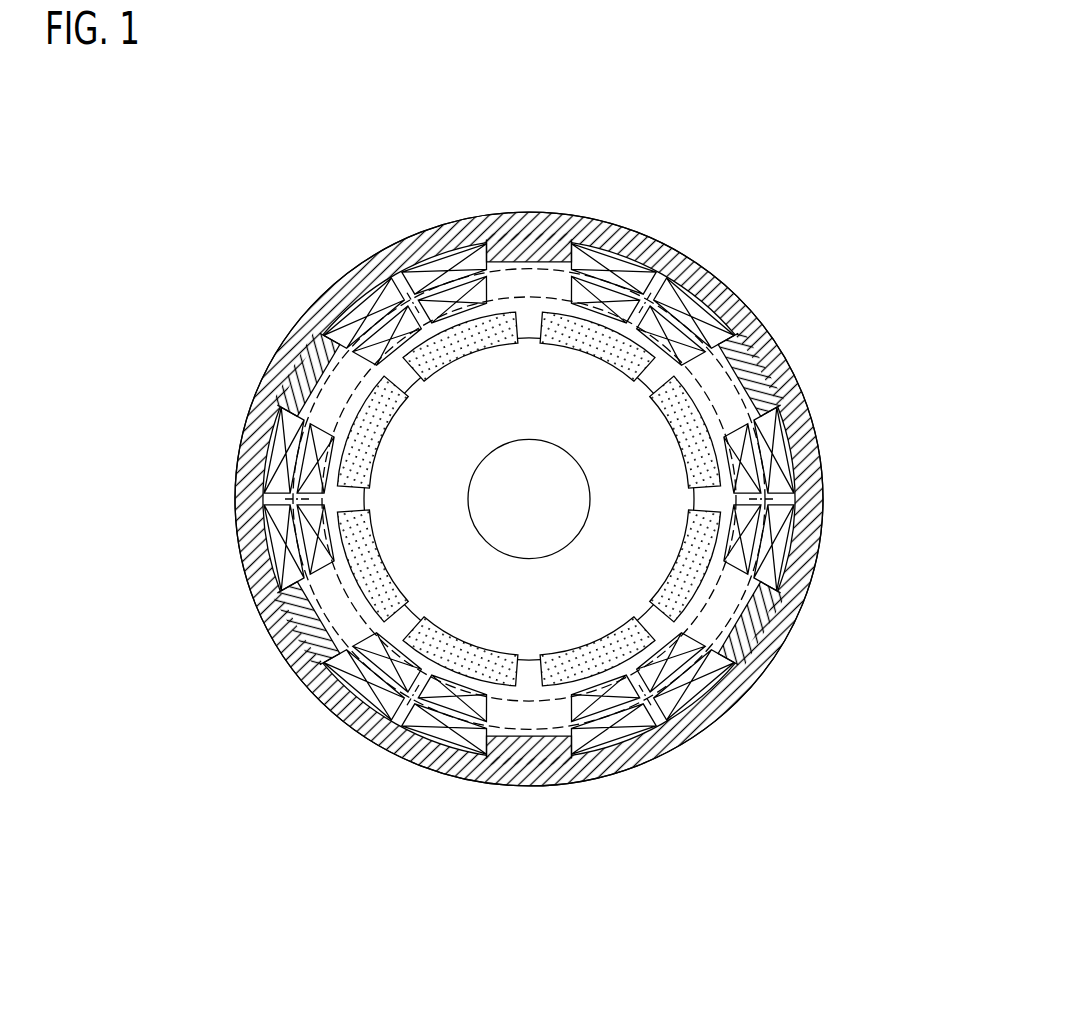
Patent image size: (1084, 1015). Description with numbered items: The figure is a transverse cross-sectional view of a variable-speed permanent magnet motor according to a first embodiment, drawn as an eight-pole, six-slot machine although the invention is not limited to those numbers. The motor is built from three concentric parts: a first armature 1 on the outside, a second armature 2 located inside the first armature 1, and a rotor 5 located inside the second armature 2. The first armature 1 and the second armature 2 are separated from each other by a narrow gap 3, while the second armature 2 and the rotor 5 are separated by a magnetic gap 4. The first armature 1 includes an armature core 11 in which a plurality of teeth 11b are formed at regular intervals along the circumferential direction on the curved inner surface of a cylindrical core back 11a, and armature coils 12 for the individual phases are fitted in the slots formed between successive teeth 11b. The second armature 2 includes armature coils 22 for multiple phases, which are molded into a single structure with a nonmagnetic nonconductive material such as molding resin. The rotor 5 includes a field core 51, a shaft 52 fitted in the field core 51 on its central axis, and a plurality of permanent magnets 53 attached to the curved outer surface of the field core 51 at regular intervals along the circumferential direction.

The first armature 1 is at (583, 480).
The armature core 11 is at (529, 424).
The cylindrical core back 11a is at (420, 265).
The teeth 11b is at (489, 297).
The armature coils 12 is at (646, 241).
The second armature 2 is at (577, 480).
The armature coils 22 is at (713, 272).
The gap 3 is at (543, 730).
The magnetic gap 4 is at (528, 680).
The rotor 5 is at (612, 479).
The field core 51 is at (607, 603).
The shaft 52 is at (561, 537).
The permanent magnets 53 is at (467, 327).